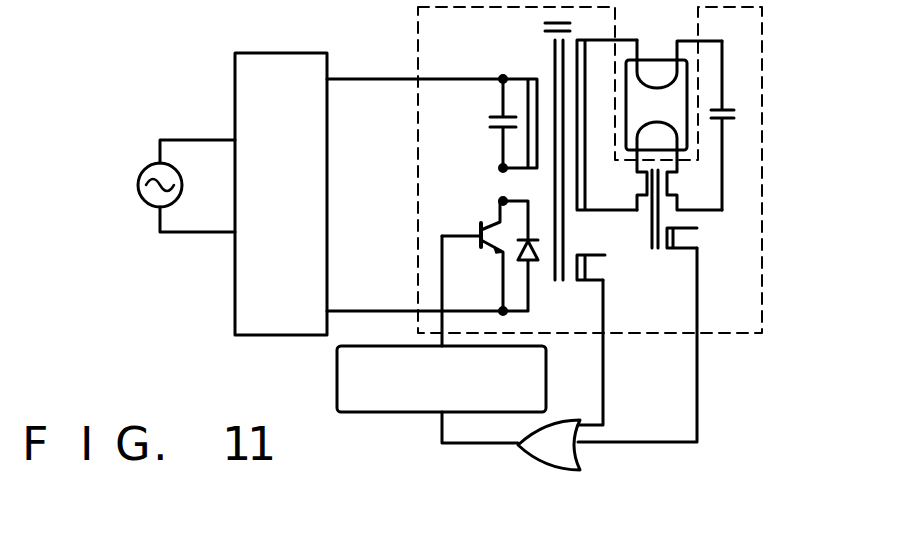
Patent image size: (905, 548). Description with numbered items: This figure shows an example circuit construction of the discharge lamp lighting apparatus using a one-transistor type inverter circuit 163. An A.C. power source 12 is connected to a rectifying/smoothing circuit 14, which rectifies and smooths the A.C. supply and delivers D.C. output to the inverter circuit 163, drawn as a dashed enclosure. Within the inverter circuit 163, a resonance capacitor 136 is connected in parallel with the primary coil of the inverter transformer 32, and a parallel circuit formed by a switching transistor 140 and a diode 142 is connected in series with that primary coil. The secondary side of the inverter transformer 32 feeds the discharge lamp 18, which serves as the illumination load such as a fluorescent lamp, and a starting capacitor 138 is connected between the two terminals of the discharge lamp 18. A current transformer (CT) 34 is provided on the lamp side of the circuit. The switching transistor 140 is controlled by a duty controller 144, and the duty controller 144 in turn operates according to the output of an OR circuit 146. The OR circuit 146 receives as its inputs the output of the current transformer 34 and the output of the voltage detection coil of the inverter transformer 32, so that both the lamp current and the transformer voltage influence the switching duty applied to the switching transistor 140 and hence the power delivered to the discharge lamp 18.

The A.C. power source 12 is at (139, 192).
The rectifying/smoothing circuit 14 is at (236, 260).
The discharge lamp 18 is at (655, 60).
The inverter transformer 32 is at (548, 68).
The current transformer (CT) 34 is at (678, 222).
The resonance capacitor 136 is at (490, 125).
The starting capacitor 138 is at (745, 117).
The switching transistor 140 is at (481, 224).
The diode 142 is at (529, 261).
The duty controller 144 is at (336, 384).
The OR circuit 146 is at (573, 458).
The one-transistor type inverter circuit 163 is at (762, 53).